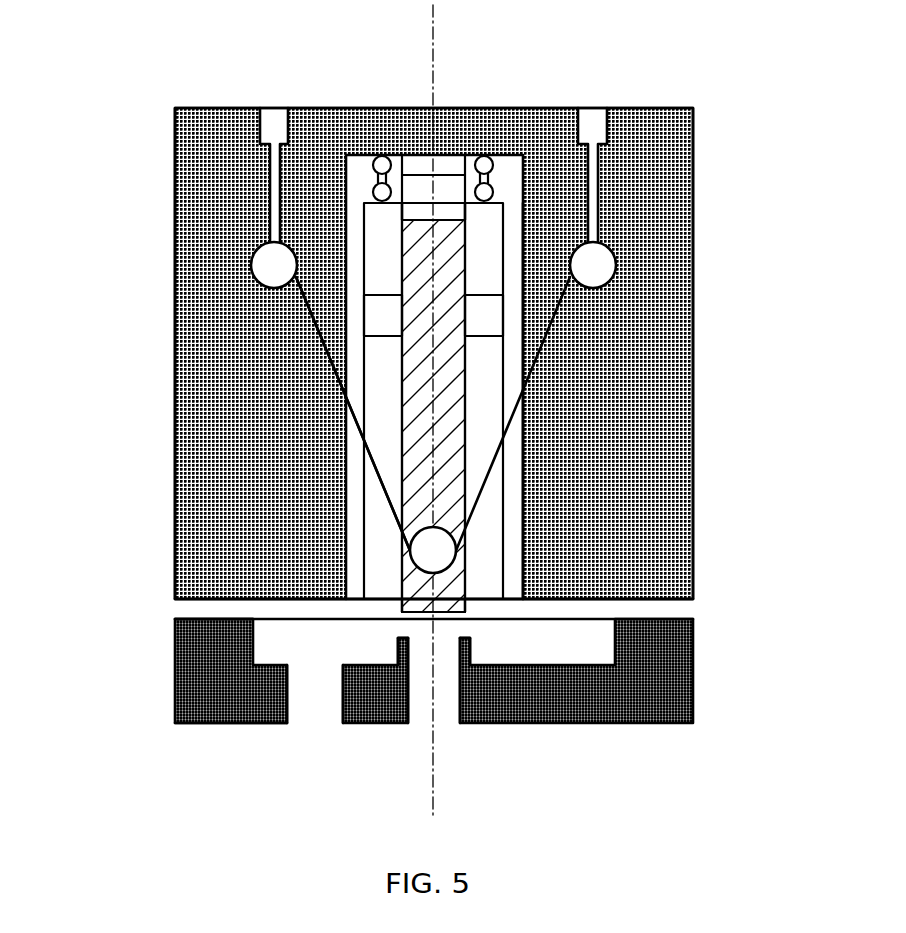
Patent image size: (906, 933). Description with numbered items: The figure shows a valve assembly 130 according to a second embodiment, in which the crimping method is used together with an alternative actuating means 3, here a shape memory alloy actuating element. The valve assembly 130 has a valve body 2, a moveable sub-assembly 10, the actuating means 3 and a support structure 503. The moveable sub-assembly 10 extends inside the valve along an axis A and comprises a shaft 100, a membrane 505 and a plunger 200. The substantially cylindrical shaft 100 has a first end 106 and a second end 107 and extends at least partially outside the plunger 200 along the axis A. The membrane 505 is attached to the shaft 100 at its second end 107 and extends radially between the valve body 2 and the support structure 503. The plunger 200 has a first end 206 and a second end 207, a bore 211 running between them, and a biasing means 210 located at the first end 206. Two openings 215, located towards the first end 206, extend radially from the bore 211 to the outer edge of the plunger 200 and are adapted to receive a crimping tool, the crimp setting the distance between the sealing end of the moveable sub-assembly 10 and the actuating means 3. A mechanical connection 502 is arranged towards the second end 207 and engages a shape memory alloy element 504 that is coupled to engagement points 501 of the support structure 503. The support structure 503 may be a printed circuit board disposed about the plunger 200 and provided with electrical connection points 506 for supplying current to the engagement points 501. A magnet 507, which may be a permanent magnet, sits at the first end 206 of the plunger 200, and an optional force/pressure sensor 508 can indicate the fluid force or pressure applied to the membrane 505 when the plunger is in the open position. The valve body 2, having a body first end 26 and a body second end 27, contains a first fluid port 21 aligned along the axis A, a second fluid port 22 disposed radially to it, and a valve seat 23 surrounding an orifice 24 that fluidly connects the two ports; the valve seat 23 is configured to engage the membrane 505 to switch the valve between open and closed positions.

The valve body 2 is at (693, 700).
The actuating means 3 is at (350, 412).
The moveable sub-assembly 10 is at (513, 449).
The first fluid port 21 is at (418, 718).
The second fluid port 22 is at (317, 712).
The valve seat 23 is at (469, 640).
The orifice 24 is at (435, 643).
The body first end 26 is at (175, 620).
The body second end 27 is at (175, 723).
The shaft 100 is at (410, 515).
The first end 106 is at (418, 218).
The second end 107 is at (455, 612).
The valve assembly 130 is at (108, 109).
The plunger 200 is at (480, 493).
The first end 206 is at (503, 203).
The second end 207 is at (465, 605).
The biasing means 210 is at (372, 183).
The bore 211 is at (470, 175).
The openings 215 is at (380, 325).
The engagement points 501 is at (265, 263).
The mechanical connection 502 is at (455, 556).
The support structure 503 is at (675, 388).
The shape memory alloy element 504 is at (378, 483).
The membrane 505 is at (188, 611).
The electrical connection points 506 is at (267, 113).
The magnet 507 is at (418, 184).
The force/pressure sensor 508 is at (430, 207).
The axis A is at (438, 797).